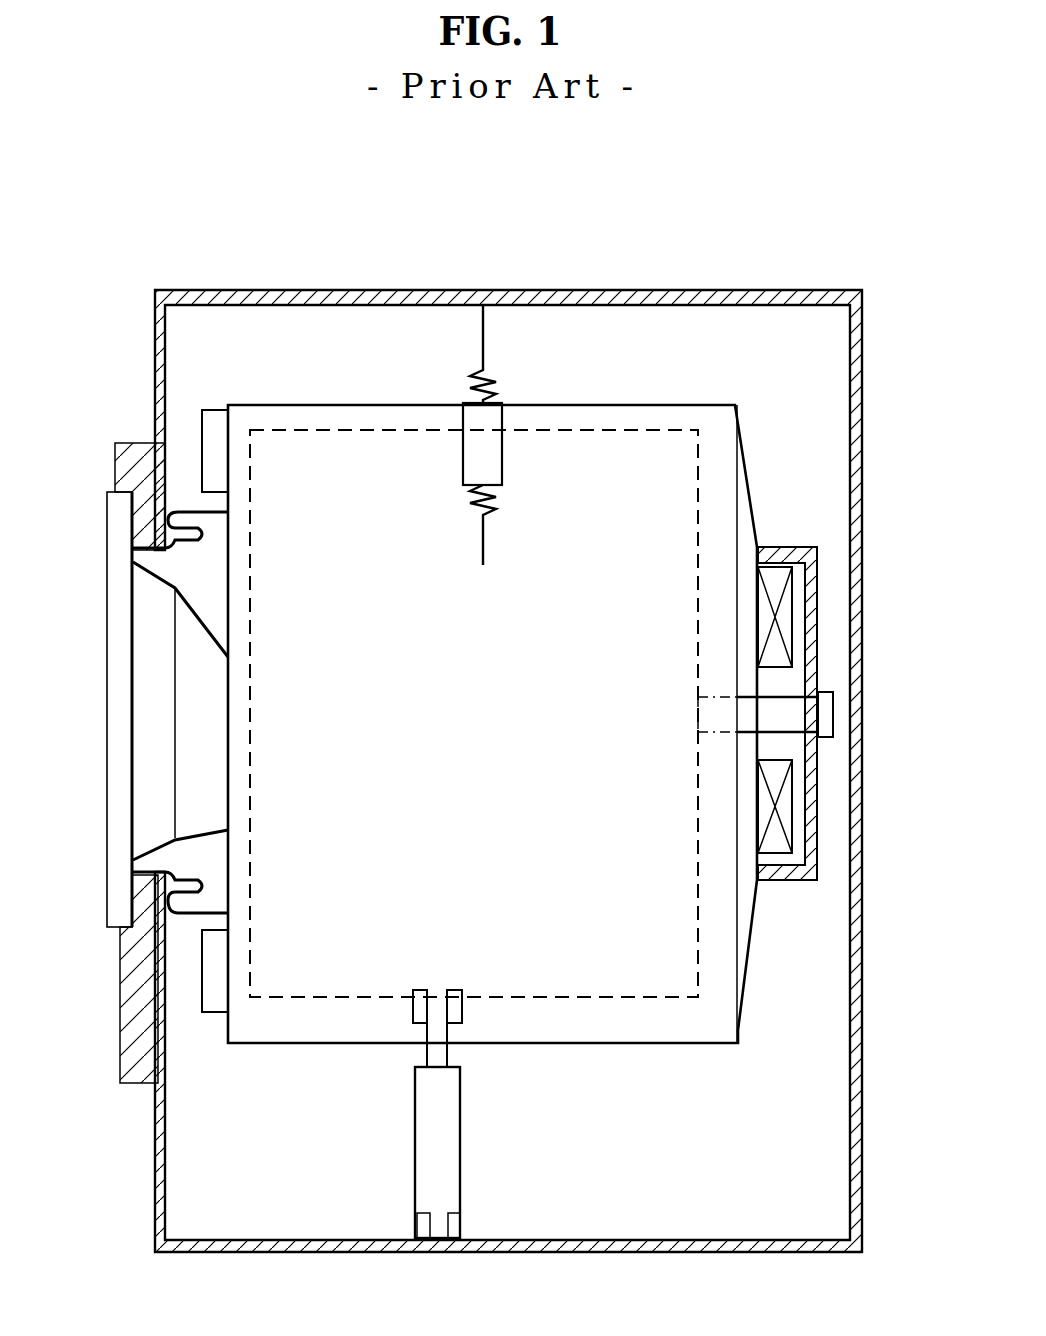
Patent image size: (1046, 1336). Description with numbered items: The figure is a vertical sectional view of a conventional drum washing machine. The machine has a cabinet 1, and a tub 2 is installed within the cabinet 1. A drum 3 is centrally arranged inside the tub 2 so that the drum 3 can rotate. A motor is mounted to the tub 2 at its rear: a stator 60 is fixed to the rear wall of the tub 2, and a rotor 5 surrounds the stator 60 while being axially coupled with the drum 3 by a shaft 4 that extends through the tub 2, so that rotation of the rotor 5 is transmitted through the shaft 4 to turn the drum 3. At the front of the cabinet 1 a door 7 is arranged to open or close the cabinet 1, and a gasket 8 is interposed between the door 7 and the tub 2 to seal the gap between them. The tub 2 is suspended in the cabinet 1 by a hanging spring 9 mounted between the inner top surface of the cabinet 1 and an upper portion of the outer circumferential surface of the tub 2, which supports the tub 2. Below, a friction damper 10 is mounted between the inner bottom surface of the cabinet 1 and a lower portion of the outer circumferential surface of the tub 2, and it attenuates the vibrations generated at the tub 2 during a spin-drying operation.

The cabinet 1 is at (262, 292).
The tub 2 is at (635, 405).
The drum 3 is at (365, 430).
The shaft 4 is at (780, 712).
The rotor 5 is at (813, 815).
The stator 60 is at (780, 617).
The door 7 is at (118, 727).
The gasket 8 is at (172, 915).
The hanging spring 9 is at (488, 372).
The friction damper 10 is at (445, 1150).